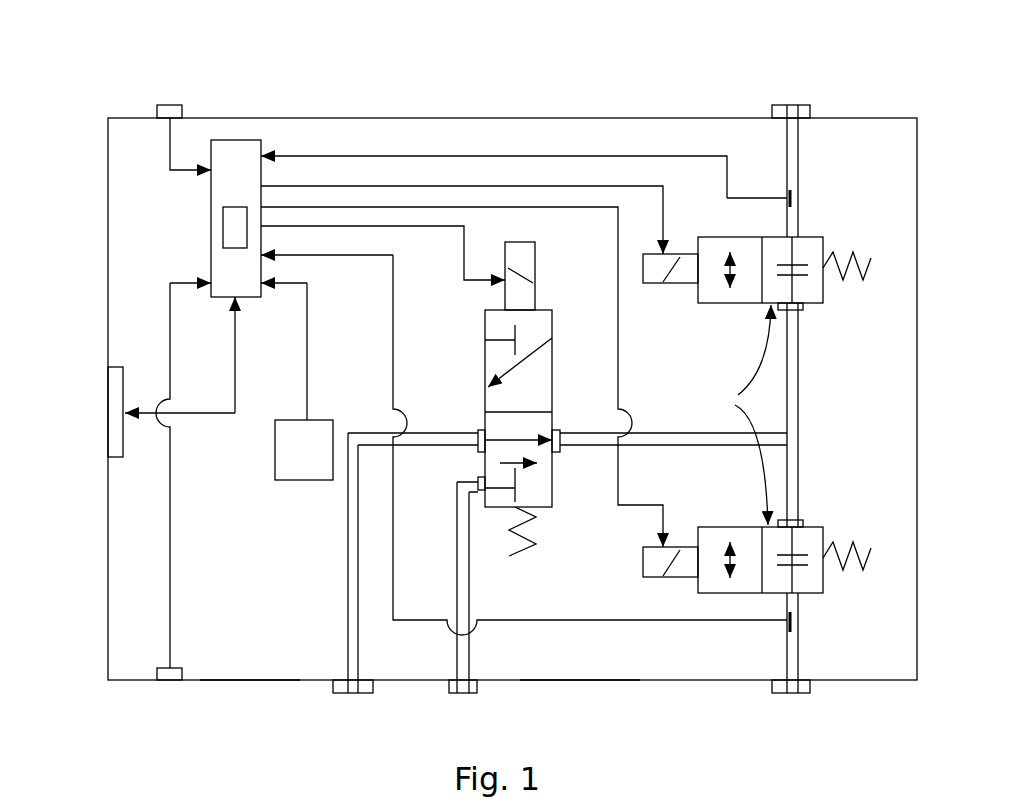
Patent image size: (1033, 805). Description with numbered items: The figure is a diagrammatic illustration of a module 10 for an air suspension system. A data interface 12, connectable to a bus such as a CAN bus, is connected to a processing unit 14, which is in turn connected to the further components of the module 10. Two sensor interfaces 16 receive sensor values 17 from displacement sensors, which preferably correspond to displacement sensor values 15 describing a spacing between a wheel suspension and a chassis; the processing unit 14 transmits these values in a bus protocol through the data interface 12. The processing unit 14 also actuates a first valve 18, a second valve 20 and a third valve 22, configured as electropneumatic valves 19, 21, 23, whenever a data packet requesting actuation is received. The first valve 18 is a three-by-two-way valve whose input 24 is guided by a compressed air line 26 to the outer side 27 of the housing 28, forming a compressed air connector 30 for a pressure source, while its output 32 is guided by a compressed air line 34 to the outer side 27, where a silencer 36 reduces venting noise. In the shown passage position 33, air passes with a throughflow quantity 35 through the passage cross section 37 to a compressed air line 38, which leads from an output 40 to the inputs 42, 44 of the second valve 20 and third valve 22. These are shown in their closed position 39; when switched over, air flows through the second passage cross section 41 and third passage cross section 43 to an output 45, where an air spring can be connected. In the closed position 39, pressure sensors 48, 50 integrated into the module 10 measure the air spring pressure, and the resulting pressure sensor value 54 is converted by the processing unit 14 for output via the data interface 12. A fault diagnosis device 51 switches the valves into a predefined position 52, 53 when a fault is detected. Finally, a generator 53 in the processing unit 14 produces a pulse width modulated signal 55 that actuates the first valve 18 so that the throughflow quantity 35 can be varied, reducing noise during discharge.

The module 10 is at (882, 117).
The data interface 12 is at (115, 425).
The processing unit 14 is at (247, 138).
The displacement sensor values 15 is at (168, 166).
The sensor interface 16 is at (171, 103).
The sensor values 17 is at (188, 167).
The first valve 18 is at (486, 338).
The electropneumatic valve 19 is at (538, 308).
The second valve 20 is at (820, 235).
The electropneumatic valve 21 is at (825, 290).
The third valve 22 is at (807, 545).
The electropneumatic valve 23 is at (825, 575).
The input 24 is at (481, 425).
The compressed air line 26 is at (347, 543).
The outer side 27 is at (237, 681).
The housing 28 is at (575, 681).
The compressed air connector 30 is at (352, 698).
The output 32 is at (479, 493).
The passage position 33 is at (598, 370).
The compressed air line 34 is at (462, 655).
The throughflow quantity 35 is at (522, 468).
The silencer 36 is at (467, 695).
The passage cross section 37 is at (522, 430).
The compressed air line 38 is at (797, 423).
The closed position 39 is at (747, 305).
The output 40 is at (554, 452).
The second passage cross section 41 is at (730, 263).
The input 42 is at (793, 311).
The third passage cross section 43 is at (733, 562).
The input 44 is at (792, 103).
The output 45 is at (792, 697).
The pressure sensor 48 is at (797, 613).
The pressure sensor 50 is at (793, 196).
The fault diagnosis device 51 is at (297, 381).
The predefined position 52 is at (598, 348).
The generator 53 is at (235, 228).
The pressure sensor value 54 is at (480, 155).
The pulse width modulated signal 55 is at (363, 224).